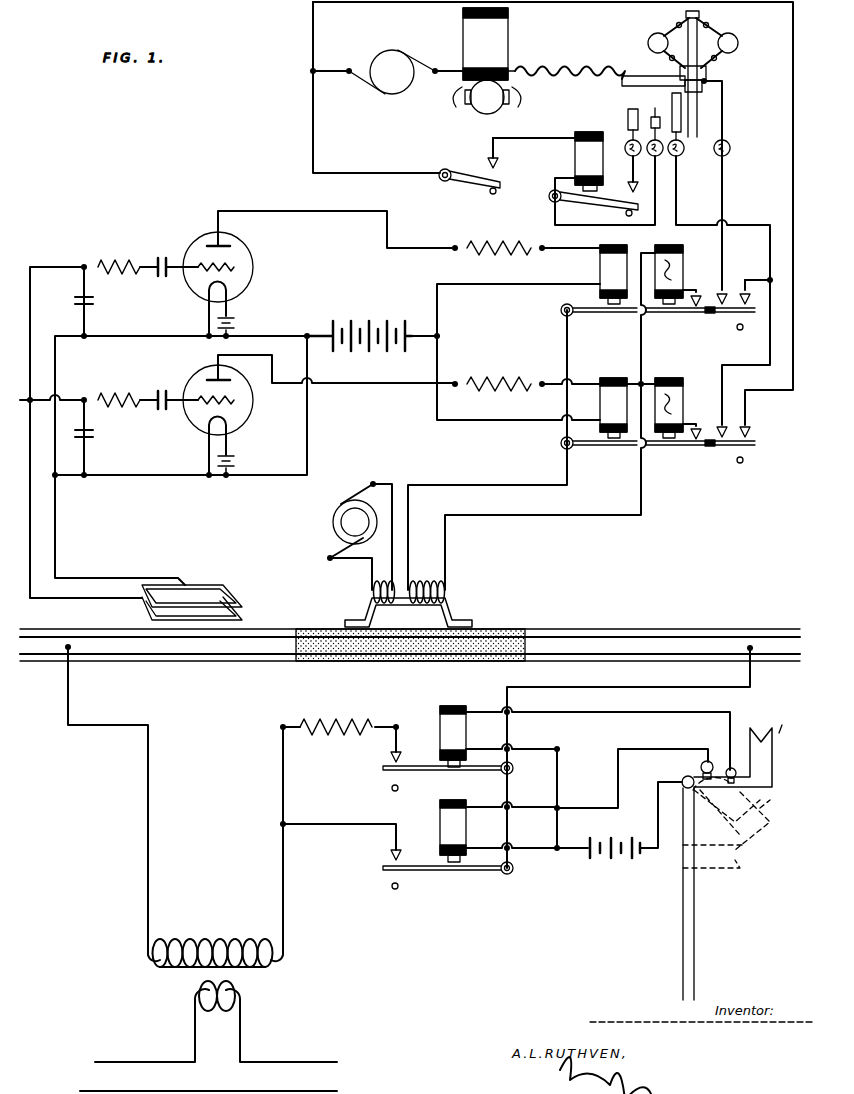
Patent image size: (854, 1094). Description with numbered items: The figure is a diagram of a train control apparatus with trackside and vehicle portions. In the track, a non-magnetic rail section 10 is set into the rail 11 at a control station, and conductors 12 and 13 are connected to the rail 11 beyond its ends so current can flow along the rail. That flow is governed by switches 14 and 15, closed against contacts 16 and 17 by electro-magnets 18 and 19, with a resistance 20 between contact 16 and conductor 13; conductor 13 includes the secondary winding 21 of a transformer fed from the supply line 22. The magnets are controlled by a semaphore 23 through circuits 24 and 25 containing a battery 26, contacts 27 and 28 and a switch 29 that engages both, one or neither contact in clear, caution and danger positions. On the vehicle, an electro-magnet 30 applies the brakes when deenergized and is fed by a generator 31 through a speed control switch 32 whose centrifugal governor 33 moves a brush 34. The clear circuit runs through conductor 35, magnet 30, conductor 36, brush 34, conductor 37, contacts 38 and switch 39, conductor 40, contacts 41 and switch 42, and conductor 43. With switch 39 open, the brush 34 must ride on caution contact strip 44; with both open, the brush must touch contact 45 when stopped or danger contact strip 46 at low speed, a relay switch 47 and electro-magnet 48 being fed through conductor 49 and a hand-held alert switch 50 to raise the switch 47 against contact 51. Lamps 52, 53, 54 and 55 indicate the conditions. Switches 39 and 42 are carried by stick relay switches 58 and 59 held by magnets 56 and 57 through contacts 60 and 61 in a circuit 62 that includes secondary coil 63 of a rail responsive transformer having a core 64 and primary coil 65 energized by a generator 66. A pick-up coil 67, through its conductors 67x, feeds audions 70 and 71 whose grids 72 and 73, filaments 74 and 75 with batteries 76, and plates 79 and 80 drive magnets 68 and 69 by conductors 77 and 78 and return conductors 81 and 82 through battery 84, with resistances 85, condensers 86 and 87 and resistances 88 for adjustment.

The non-magnetic rail section 10 is at (410, 648).
The rail 11 is at (595, 637).
The conductor 12 is at (580, 690).
The conductor 13 is at (148, 768).
The switch 14 is at (432, 775).
The switch 15 is at (420, 872).
The contact 16 is at (388, 758).
The contact 17 is at (388, 858).
The electro-magnet 18 is at (452, 720).
The electro-magnet 19 is at (450, 825).
The resistance 20 is at (322, 716).
The secondary winding 21 is at (290, 952).
The supply line 22 is at (272, 1060).
The semaphore 23 is at (762, 758).
The circuit 24 is at (585, 714).
The circuit 25 is at (585, 808).
The battery 26 is at (612, 866).
The contact 27 is at (700, 768).
The contact 28 is at (728, 768).
The switch 29 is at (747, 800).
The electro-magnet 30 is at (497, 43).
The generator 31 is at (385, 60).
The speed control switch 32 is at (638, 52).
The centrifugal governor 33 is at (718, 32).
The brush 34 is at (628, 76).
The conductor 35 is at (445, 75).
The conductor 36 is at (560, 80).
The conductor 37 is at (724, 103).
The contacts 38 is at (726, 294).
The switch 39 is at (732, 315).
The conductor 40 is at (720, 392).
The contacts 41 is at (750, 428).
The switch 42 is at (730, 448).
The conductor 43 is at (793, 90).
The contact strip 44 is at (678, 100).
The contact 45 is at (651, 114).
The danger contact strip 46 is at (630, 112).
The switch 47 is at (600, 202).
The electro-magnet 48 is at (578, 162).
The conductor 49 is at (606, 222).
The alert switch 50 is at (470, 185).
The contact 51 is at (630, 186).
The lamp 52 is at (731, 150).
The lamp 53 is at (682, 152).
The lamp 54 is at (654, 158).
The lamp 55 is at (627, 142).
The electro-magnet 56 is at (682, 272).
The electro-magnet 57 is at (675, 388).
The switch 58 is at (616, 314).
The switch 59 is at (626, 448).
The contact 60 is at (692, 313).
The contact 61 is at (690, 444).
The circuit 62 is at (487, 485).
The secondary winding 63 is at (418, 585).
The core 64 is at (460, 598).
The primary winding 65 is at (360, 598).
The generator 66 is at (332, 528).
The pick-up coil 67 is at (180, 580).
The conductors 67x is at (30, 524).
The electro-magnet 68 is at (598, 265).
The electro-magnet 69 is at (610, 392).
The audion 70 is at (195, 236).
The audion 71 is at (190, 388).
The grid 72 is at (205, 275).
The grid 73 is at (205, 410).
The filament 74 is at (205, 300).
The filament 75 is at (205, 440).
The battery 76 is at (236, 320).
The conductor 77 is at (283, 211).
The conductor 78 is at (365, 384).
The plate 79 is at (212, 240).
The plate 80 is at (212, 378).
The conductor 81 is at (295, 330).
The conductor 82 is at (310, 445).
The battery 84 is at (372, 320).
The resistance 85 is at (500, 250).
The condenser 86 is at (156, 256).
The condenser 87 is at (94, 303).
The resistance 88 is at (110, 255).